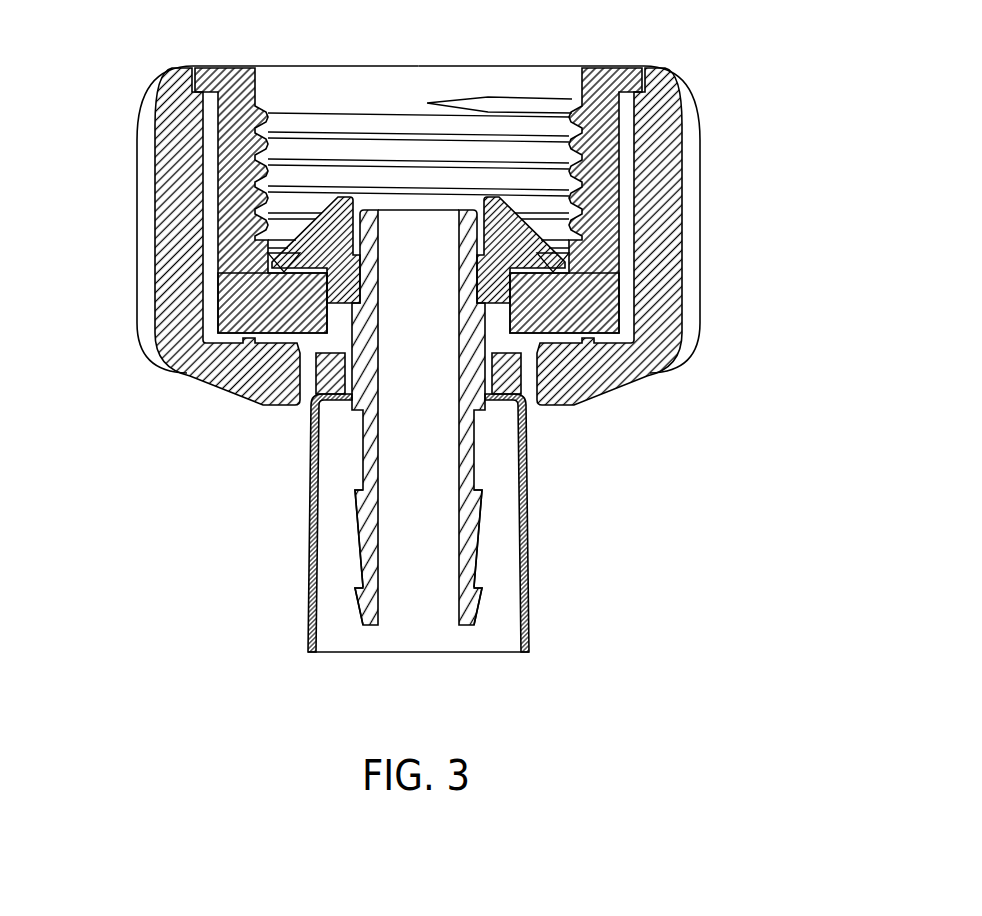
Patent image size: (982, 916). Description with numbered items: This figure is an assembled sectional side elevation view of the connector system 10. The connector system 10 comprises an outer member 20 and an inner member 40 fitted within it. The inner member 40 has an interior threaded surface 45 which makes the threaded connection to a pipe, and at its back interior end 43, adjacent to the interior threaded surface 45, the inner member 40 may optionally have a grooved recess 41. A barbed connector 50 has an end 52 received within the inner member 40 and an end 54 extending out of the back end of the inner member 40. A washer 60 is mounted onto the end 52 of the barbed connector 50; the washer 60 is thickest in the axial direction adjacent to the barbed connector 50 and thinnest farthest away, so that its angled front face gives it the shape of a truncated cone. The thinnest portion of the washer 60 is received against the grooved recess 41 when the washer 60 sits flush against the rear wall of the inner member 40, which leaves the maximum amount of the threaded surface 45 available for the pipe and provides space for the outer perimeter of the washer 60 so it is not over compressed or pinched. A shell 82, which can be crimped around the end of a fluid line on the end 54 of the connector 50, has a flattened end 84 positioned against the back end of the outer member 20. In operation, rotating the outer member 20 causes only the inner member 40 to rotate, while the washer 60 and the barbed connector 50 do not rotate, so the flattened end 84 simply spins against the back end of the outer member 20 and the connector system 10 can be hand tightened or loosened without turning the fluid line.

The connector system 10 is at (731, 75).
The outer member 20 is at (182, 122).
The inner member 40 is at (592, 254).
The grooved recess 41 is at (558, 284).
The back interior end 43 is at (222, 308).
The interior threaded surface 45 is at (257, 114).
The barbed connector 50 is at (470, 433).
The end 52 is at (472, 212).
The end 54 is at (480, 590).
The washer 60 is at (322, 205).
The shell 82 is at (527, 486).
The flattened end 84 is at (297, 433).